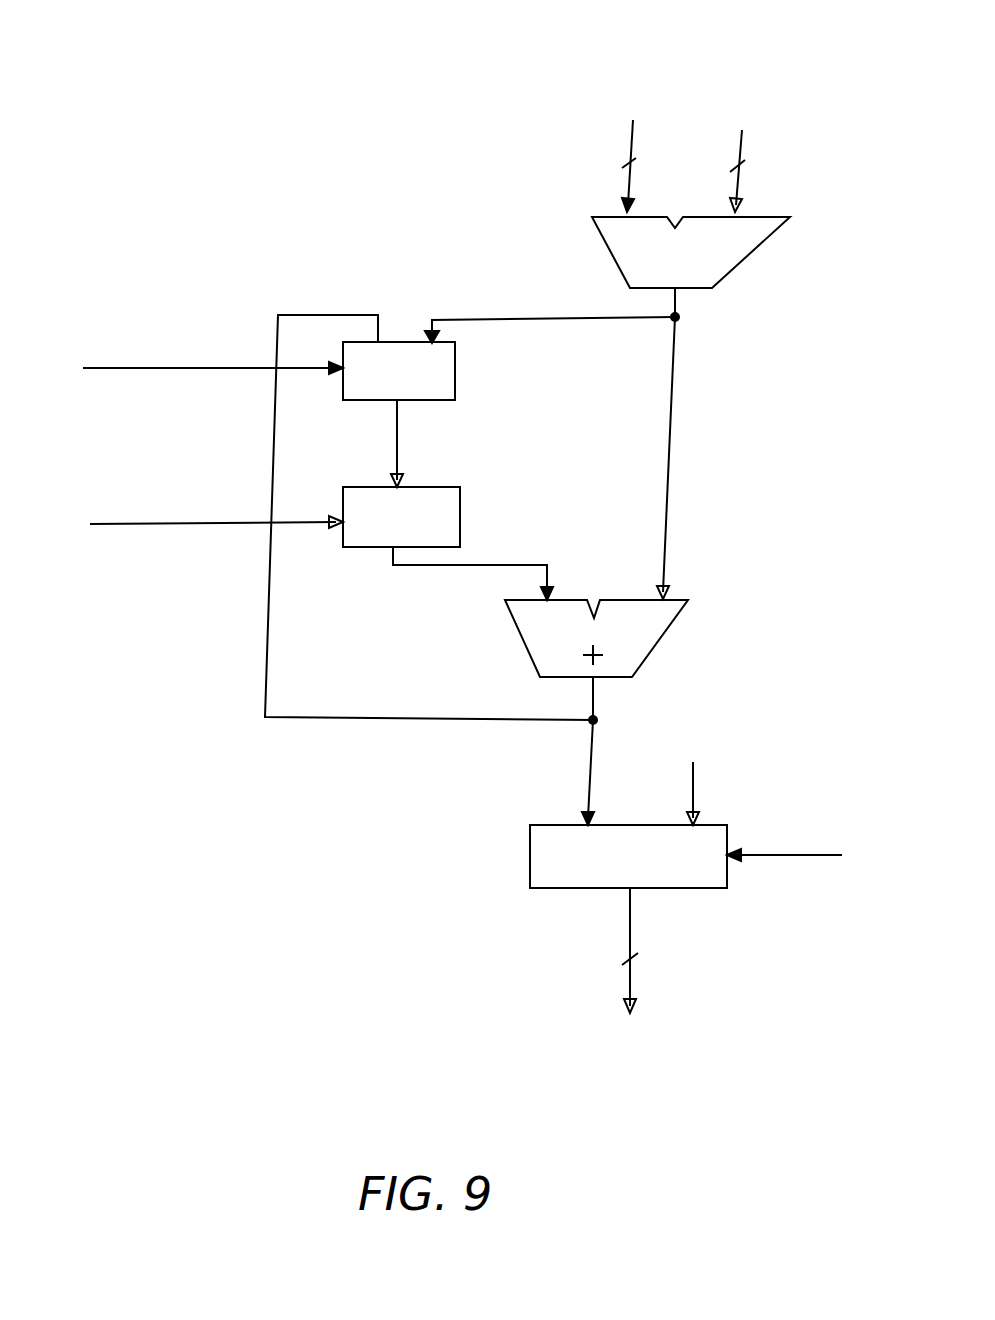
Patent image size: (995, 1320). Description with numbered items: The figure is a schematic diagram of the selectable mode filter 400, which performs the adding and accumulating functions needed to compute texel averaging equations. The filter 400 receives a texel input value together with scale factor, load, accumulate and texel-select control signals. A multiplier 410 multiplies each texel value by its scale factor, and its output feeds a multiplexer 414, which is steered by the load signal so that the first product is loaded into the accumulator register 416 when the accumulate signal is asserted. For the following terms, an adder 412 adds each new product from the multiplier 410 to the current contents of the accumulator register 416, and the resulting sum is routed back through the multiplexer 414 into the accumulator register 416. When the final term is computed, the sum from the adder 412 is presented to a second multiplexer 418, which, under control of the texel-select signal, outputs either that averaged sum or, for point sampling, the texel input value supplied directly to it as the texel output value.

The selectable mode filter 400 is at (360, 150).
The multiplier 410 is at (750, 253).
The adder 412 is at (777, 612).
The multiplexer 414 is at (455, 388).
The accumulator register 416 is at (460, 520).
The multiplexer 418 is at (528, 863).